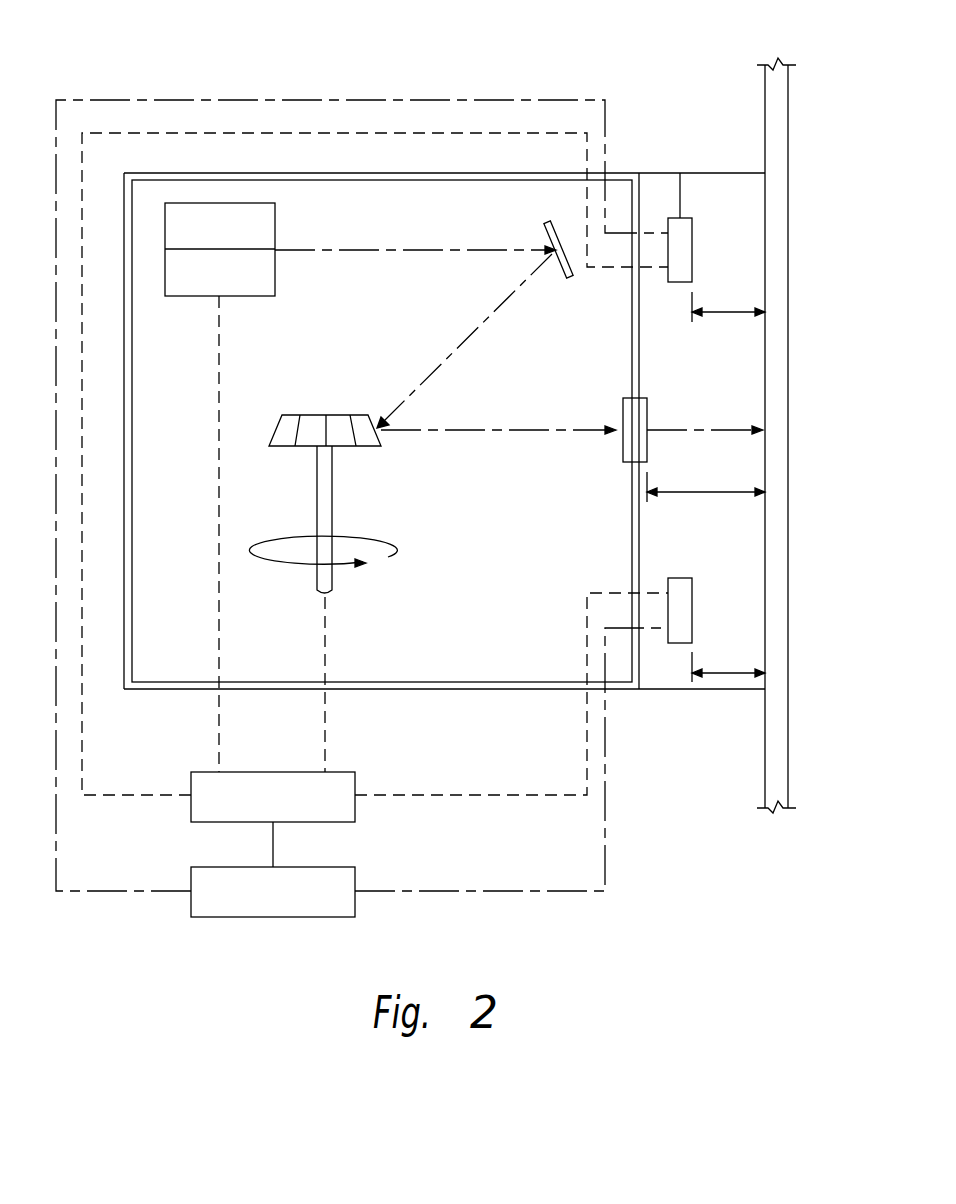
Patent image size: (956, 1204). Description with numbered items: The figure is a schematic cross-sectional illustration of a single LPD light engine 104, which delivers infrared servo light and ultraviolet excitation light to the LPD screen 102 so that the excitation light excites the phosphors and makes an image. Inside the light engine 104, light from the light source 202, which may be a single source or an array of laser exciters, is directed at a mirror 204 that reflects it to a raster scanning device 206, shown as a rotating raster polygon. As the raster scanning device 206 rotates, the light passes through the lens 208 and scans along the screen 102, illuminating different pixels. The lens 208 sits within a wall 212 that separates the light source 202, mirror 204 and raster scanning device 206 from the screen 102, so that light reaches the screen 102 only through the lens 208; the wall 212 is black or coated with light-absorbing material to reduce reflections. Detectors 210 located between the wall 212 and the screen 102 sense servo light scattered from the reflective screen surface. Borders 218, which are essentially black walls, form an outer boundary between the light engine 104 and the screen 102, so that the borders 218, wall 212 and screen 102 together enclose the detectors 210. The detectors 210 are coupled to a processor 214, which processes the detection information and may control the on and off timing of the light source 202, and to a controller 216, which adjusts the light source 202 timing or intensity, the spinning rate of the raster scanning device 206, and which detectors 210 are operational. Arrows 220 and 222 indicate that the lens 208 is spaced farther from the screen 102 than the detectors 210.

The LPD screen 102 is at (788, 376).
The LPD light engine 104 is at (172, 51).
The light source 202 is at (203, 237).
The mirror 204 is at (546, 221).
The raster scanning device 206 is at (372, 472).
The lens 208 is at (649, 410).
The detectors 210 is at (692, 226).
The wall 212 is at (641, 371).
The processor 214 is at (256, 904).
The controller 216 is at (256, 809).
The borders 218 is at (726, 307).
The arrow 220 is at (700, 489).
The arrow 222 is at (726, 670).